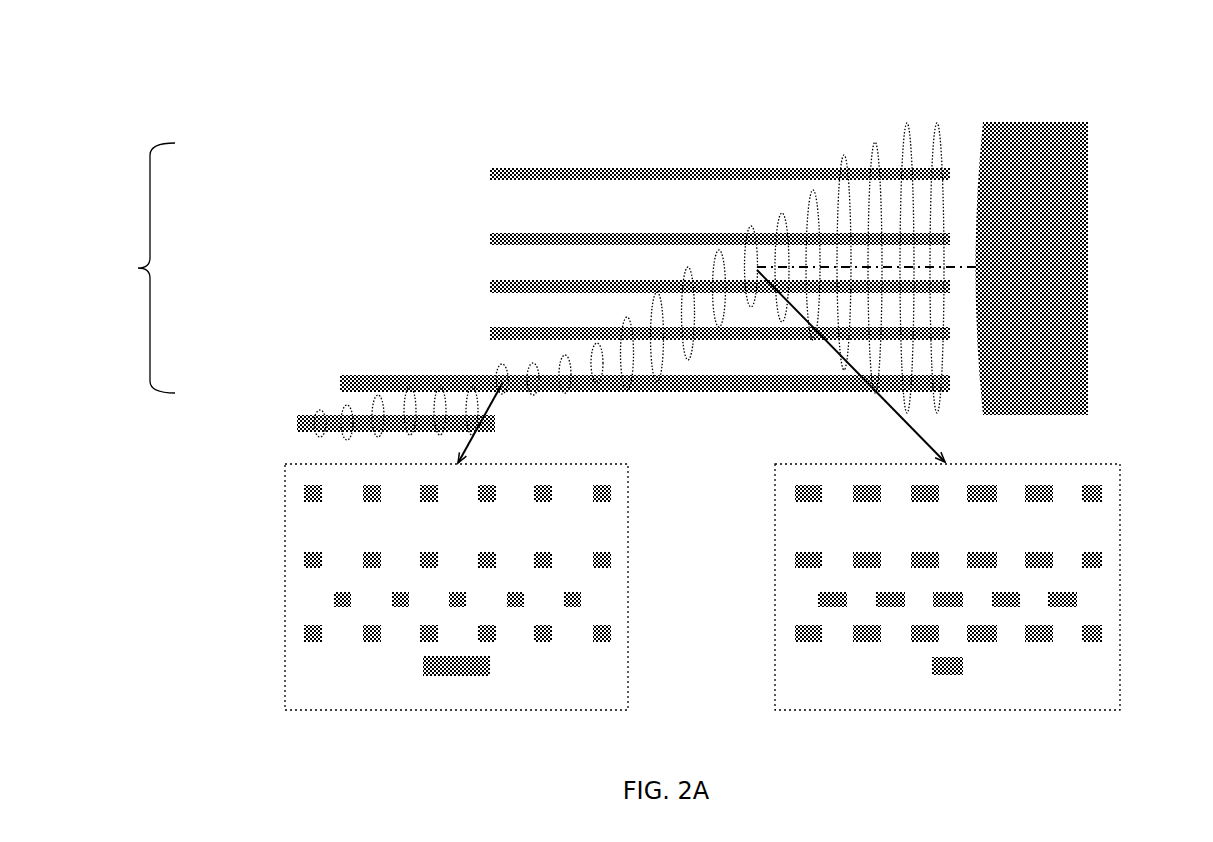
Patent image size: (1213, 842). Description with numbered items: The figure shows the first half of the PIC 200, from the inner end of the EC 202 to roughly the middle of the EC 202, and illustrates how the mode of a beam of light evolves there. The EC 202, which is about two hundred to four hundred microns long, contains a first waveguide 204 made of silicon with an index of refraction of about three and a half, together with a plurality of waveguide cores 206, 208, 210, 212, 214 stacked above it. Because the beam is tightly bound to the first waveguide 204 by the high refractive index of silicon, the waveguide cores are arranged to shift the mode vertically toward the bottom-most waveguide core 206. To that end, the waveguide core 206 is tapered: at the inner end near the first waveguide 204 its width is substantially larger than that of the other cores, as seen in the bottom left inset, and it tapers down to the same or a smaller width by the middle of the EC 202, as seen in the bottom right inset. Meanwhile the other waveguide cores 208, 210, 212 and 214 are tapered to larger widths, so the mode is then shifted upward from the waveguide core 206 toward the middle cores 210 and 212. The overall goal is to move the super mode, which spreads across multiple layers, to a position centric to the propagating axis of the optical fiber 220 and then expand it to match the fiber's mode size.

The PIC 200 is at (547, 138).
The EC 202 is at (138, 268).
The first waveguide 204 is at (188, 420).
The waveguide core 206 is at (190, 368).
The waveguide core 208 is at (193, 320).
The waveguide core 210 is at (195, 273).
The waveguide core 212 is at (195, 237).
The waveguide core 214 is at (200, 184).
The optical fiber 220 is at (1070, 268).